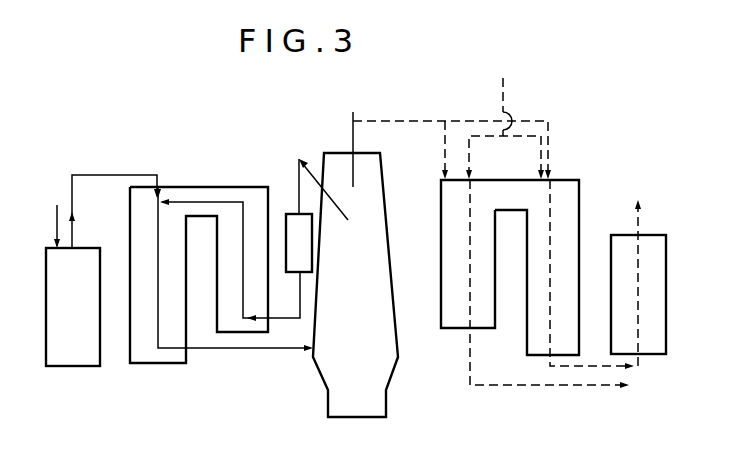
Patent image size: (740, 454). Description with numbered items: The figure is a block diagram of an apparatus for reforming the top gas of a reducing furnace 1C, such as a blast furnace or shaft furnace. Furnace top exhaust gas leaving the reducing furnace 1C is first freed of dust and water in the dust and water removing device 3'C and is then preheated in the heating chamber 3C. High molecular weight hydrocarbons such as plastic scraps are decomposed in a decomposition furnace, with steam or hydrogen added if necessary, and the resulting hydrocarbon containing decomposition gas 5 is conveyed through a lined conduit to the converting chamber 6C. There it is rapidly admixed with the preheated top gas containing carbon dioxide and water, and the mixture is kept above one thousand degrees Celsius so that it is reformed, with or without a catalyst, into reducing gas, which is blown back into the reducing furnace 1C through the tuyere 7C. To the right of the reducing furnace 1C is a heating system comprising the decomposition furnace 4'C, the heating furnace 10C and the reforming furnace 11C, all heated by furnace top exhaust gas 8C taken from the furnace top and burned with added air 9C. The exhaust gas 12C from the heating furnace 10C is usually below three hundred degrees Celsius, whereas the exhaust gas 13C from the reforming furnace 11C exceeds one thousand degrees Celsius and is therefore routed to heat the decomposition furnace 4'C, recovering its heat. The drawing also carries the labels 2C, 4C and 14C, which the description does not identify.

The reducing furnace 1C is at (360, 282).
The charging conduit 2C is at (342, 173).
The heating chamber 3C is at (269, 289).
The dust and water removing device 3'C is at (309, 215).
The heat consumer 4C is at (85, 317).
The decomposition furnace 4'C is at (644, 294).
The hydrocarbon containing decomposition gas 5 is at (101, 176).
The converting chamber 6C is at (178, 289).
The tuyere 7C is at (289, 351).
The furnace top exhaust gas 8C is at (452, 145).
The air 9C is at (505, 93).
The heating furnace 10C is at (466, 278).
The reforming furnace 11C is at (575, 278).
The exhaust gas from the heating furnace 12C is at (630, 390).
The exhaust gas from the reforming furnace 13C is at (632, 370).
The outlet line 14C is at (647, 214).